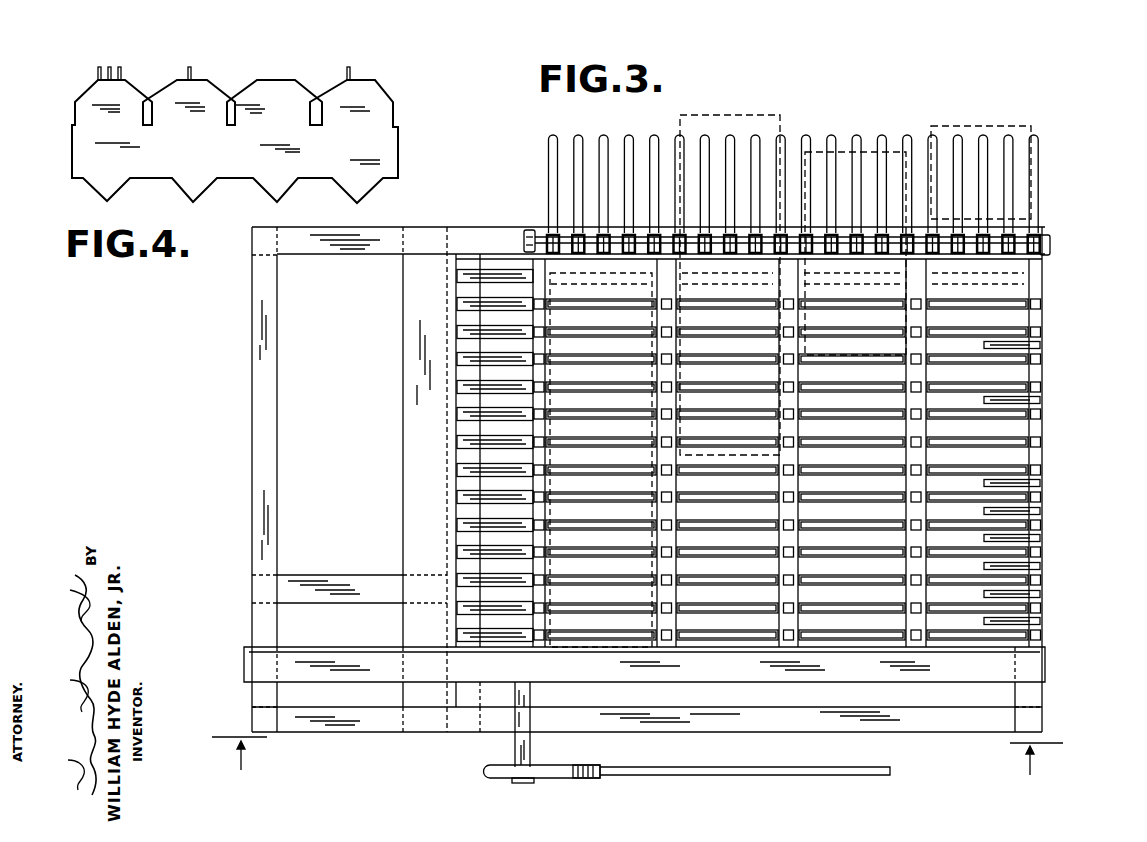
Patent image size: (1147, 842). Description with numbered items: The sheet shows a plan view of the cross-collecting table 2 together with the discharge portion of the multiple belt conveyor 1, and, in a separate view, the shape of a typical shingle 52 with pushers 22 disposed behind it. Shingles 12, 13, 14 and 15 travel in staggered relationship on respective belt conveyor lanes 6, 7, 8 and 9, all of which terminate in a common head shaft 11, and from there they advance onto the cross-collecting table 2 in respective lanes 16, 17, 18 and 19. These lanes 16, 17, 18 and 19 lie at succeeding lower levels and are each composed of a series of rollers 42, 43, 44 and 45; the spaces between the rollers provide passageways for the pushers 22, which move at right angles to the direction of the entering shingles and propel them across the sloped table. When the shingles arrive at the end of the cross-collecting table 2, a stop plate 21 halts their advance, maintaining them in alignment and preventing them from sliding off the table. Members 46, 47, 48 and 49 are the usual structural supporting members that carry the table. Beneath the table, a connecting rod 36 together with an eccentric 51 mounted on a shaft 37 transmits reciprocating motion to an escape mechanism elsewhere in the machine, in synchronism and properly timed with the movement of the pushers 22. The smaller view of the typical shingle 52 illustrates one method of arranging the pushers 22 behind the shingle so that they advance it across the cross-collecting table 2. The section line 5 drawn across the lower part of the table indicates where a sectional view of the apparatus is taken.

In FIG. 3, the multiple belt conveyor 1 is at (816, 170).
In FIG. 3, the cross-collecting table 2 is at (784, 471).
In FIG. 3, the section line 5 is at (636, 757).
In FIG. 3, the belt conveyor lane 6 is at (594, 148).
In FIG. 3, the belt conveyor lane 7 is at (706, 140).
In FIG. 3, the belt conveyor lane 8 is at (830, 148).
In FIG. 3, the belt conveyor lane 9 is at (957, 137).
In FIG. 3, the common head shaft 11 is at (1050, 243).
In FIG. 3, the shingle 12 is at (535, 229).
In FIG. 3, the shingle 13 is at (760, 115).
In FIG. 3, the shingle 14 is at (866, 152).
In FIG. 3, the shingle 15 is at (1011, 127).
In FIG. 3, the lane 16 is at (601, 478).
In FIG. 3, the lane 17 is at (727, 478).
In FIG. 3, the lane 18 is at (852, 478).
In FIG. 3, the lane 19 is at (977, 478).
In FIG. 3, the stop plate 21 is at (244, 664).
In FIG. 3, the pushers 22 is at (1040, 346).
In FIG. 4, the pushers 22 is at (120, 67).
In FIG. 3, the connecting rod 36 is at (687, 773).
In FIG. 3, the shaft 37 is at (515, 749).
In FIG. 3, the rollers 42 is at (601, 432).
In FIG. 3, the rollers 43 is at (727, 515).
In FIG. 3, the rollers 44 is at (852, 543).
In FIG. 3, the rollers 45 is at (977, 598).
In FIG. 3, the structural supporting member 46 is at (357, 256).
In FIG. 3, the structural supporting member 47 is at (252, 386).
In FIG. 3, the structural supporting member 48 is at (331, 576).
In FIG. 3, the structural supporting member 49 is at (364, 733).
In FIG. 3, the eccentric 51 is at (571, 767).
In FIG. 4, the shingle 52 is at (398, 146).